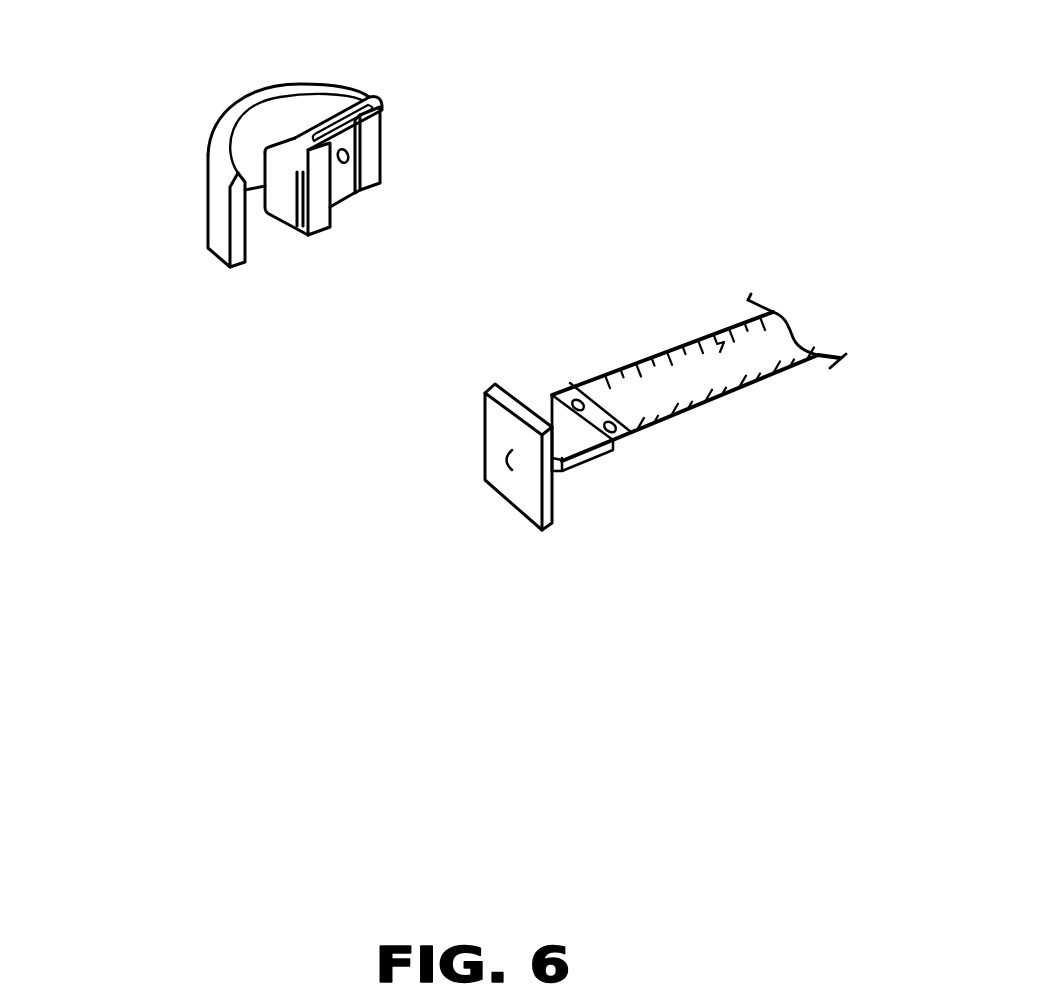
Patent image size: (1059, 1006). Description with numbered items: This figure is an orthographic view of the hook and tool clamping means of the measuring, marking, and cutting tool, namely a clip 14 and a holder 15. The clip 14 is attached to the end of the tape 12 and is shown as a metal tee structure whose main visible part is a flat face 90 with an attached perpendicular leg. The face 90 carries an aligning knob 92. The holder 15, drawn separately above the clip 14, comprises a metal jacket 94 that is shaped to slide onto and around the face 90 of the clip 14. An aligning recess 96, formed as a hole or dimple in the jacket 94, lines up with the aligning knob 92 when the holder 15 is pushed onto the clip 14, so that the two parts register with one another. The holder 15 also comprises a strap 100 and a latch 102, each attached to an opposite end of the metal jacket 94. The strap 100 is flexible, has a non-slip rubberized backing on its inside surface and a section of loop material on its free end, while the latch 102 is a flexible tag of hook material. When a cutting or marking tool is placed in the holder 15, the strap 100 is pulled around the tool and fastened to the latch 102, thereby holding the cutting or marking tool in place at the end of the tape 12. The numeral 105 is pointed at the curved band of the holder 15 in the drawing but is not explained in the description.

The tape 12 is at (727, 402).
The clip 14 is at (620, 482).
The holder 15 is at (203, 138).
The face 90 is at (432, 462).
The aligning knob 92 is at (485, 463).
The metal jacket 94 is at (357, 85).
The aligning recess 96 is at (342, 175).
The strap 100 is at (273, 87).
The latch 102 is at (275, 222).
The curved band 105 is at (235, 166).